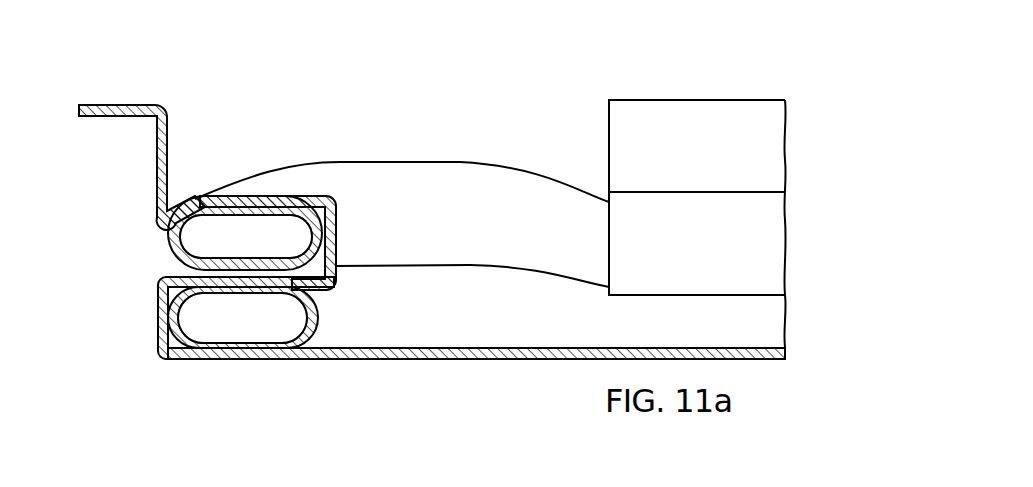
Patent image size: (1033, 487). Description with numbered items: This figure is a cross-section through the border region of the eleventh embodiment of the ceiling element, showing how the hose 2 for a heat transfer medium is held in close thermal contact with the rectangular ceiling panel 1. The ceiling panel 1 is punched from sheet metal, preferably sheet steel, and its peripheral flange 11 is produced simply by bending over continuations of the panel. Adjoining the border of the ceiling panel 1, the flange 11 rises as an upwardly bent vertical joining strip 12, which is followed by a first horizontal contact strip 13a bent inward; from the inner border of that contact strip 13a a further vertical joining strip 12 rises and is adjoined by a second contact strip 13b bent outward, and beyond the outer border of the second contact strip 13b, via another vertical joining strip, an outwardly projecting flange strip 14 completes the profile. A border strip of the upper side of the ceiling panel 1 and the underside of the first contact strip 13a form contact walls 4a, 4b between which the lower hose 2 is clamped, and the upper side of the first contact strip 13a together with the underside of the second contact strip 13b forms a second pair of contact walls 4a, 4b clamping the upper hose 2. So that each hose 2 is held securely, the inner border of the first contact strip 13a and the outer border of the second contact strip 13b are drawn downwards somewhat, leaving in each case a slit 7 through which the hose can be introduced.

The ceiling panel 1 is at (400, 368).
The hose 2 is at (445, 178).
The contact wall 4a is at (232, 270).
The contact wall 4b is at (260, 210).
The slit 7 is at (160, 228).
The peripheral flange 11 is at (722, 90).
The vertical joining strip 12 is at (334, 226).
The first contact strip 13a is at (178, 271).
The second contact strip 13b is at (240, 197).
The flange strip 14 is at (108, 106).